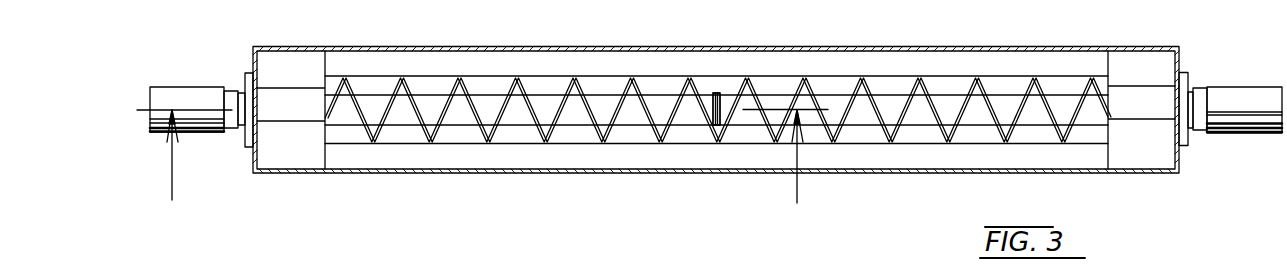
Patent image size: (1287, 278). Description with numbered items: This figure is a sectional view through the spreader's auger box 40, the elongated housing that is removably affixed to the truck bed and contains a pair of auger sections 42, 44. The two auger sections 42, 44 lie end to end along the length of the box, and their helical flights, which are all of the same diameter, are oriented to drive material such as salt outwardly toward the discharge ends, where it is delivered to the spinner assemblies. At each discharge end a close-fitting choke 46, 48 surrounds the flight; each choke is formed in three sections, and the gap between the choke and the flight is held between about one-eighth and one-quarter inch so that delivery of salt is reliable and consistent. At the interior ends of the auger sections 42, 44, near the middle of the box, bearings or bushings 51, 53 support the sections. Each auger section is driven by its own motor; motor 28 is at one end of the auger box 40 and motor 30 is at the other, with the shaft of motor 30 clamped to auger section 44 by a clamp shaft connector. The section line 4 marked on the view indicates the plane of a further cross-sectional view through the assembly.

The section line 4- 4 is at (497, 169).
The motor 28 is at (1230, 97).
The motor 30 is at (197, 97).
The auger box 40 is at (490, 170).
The auger section 42 is at (890, 89).
The auger section 44 is at (539, 90).
The choke 46 is at (1136, 83).
The choke 48 is at (280, 83).
The bearing/bushing 51 is at (712, 110).
The bearing/bushing 53 is at (720, 124).